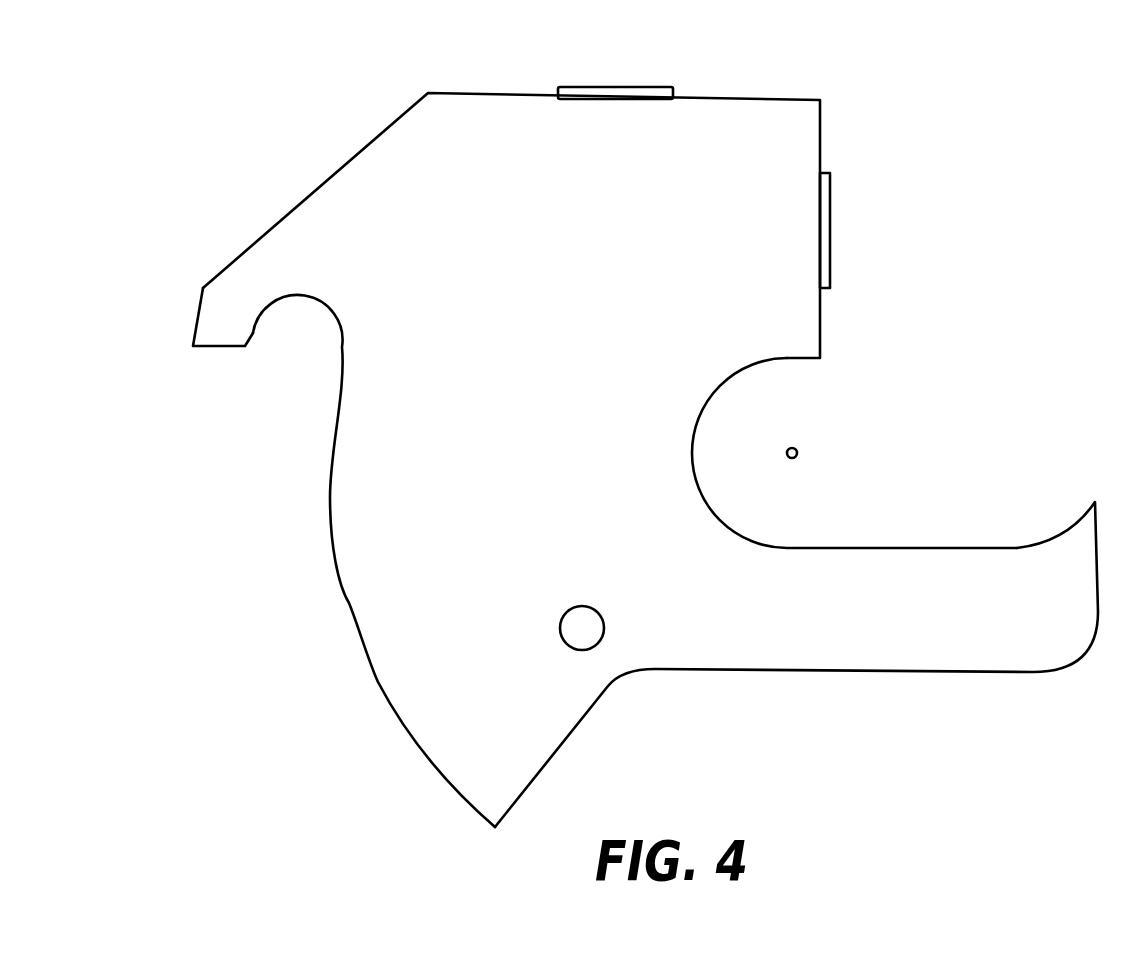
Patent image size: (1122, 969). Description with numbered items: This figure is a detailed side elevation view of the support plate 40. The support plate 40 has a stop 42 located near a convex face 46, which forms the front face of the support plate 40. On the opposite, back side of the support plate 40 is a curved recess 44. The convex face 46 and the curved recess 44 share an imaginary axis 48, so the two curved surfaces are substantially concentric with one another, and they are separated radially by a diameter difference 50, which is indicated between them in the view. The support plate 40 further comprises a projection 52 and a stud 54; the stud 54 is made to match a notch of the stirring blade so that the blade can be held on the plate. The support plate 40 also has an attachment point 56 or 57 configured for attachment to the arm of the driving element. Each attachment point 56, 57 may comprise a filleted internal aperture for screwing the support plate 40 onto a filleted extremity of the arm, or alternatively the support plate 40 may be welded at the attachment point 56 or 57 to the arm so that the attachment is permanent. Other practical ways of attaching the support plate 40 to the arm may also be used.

The support plate 40 is at (912, 132).
The stop 42 is at (215, 340).
The curved recess 44 is at (722, 385).
The convex face 46 is at (382, 692).
The imaginary axis 48 is at (798, 448).
The diameter difference 50 is at (350, 603).
The projection 52 is at (1035, 563).
The stud 54 is at (590, 650).
The attachment point 56 is at (825, 232).
The attachment point 57 is at (657, 90).